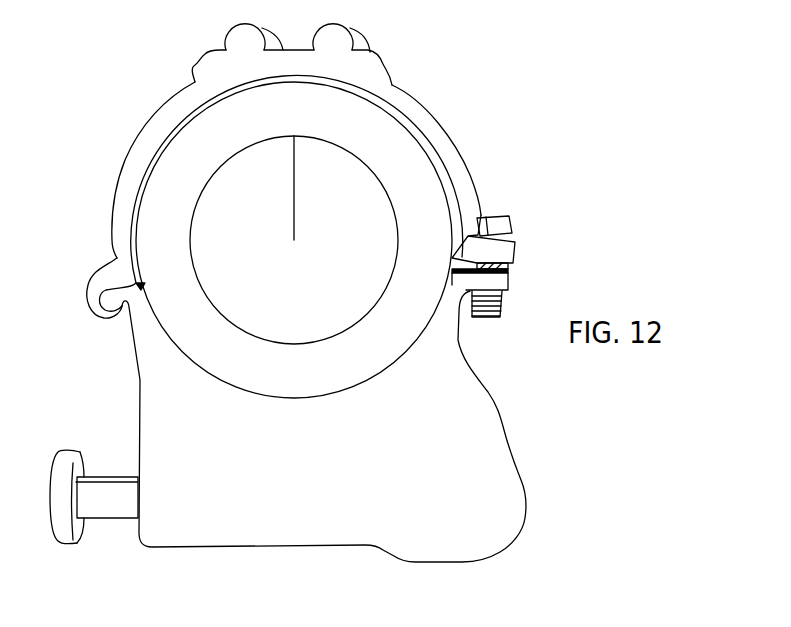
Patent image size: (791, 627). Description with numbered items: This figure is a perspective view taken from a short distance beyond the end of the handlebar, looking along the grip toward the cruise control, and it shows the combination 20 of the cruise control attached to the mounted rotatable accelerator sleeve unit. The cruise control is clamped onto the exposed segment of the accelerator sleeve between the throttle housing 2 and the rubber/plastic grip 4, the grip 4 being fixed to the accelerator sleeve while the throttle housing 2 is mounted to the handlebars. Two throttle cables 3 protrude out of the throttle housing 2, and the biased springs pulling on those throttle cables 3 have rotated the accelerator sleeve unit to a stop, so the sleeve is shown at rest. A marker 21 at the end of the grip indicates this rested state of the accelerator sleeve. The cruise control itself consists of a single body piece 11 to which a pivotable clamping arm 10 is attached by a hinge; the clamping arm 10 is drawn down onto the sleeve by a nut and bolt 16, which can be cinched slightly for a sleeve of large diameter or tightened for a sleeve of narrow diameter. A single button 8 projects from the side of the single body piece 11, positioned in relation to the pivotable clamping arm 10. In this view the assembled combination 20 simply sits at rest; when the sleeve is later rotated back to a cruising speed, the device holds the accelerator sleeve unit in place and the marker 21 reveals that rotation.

The throttle housing 2 is at (214, 80).
The throttle cables 3 is at (245, 38).
The rubber/plastic grip 4 is at (232, 237).
The single button 8 is at (92, 498).
The pivotable clamping arm 10 is at (460, 208).
The single body piece 11 is at (483, 452).
The nut and bolt 16 is at (510, 230).
The combination 20 is at (531, 130).
The marker 21 is at (293, 182).